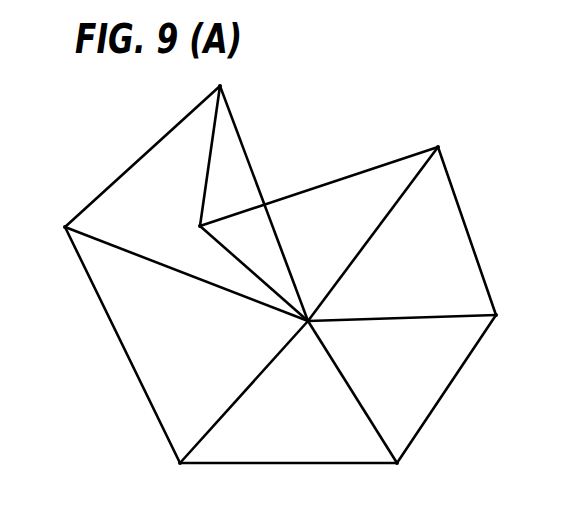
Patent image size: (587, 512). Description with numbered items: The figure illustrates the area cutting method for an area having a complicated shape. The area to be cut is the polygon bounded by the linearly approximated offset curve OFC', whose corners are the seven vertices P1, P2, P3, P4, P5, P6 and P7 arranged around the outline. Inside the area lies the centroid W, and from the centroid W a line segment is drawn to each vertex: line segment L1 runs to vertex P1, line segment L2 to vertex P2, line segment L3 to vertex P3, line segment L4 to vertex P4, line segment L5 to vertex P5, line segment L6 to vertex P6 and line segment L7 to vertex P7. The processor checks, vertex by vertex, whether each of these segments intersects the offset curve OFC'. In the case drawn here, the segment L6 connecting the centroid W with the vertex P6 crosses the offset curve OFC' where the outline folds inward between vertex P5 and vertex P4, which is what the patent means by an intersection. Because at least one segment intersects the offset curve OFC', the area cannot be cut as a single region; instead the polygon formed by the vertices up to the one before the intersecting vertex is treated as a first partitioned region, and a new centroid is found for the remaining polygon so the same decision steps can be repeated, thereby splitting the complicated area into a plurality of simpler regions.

The linearly approximated offset curve OFC' is at (280, 274).
The line segment L1 is at (255, 382).
The line segment L2 is at (347, 378).
The line segment L3 is at (405, 315).
The line segment L4 is at (377, 225).
The line segment L5 is at (220, 252).
The line segment L6 is at (245, 145).
The line segment L7 is at (123, 247).
The centroid W is at (294, 328).
The vertex P1 is at (185, 473).
The vertex P2 is at (406, 473).
The vertex P3 is at (510, 315).
The vertex P4 is at (452, 142).
The vertex P5 is at (212, 214).
The vertex P6 is at (234, 83).
The vertex P7 is at (50, 231).